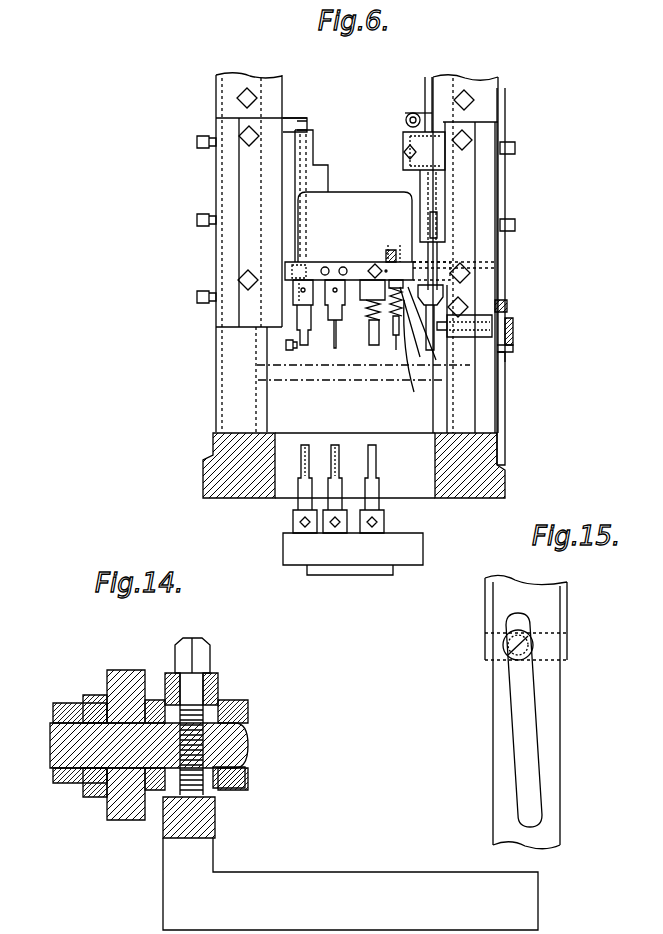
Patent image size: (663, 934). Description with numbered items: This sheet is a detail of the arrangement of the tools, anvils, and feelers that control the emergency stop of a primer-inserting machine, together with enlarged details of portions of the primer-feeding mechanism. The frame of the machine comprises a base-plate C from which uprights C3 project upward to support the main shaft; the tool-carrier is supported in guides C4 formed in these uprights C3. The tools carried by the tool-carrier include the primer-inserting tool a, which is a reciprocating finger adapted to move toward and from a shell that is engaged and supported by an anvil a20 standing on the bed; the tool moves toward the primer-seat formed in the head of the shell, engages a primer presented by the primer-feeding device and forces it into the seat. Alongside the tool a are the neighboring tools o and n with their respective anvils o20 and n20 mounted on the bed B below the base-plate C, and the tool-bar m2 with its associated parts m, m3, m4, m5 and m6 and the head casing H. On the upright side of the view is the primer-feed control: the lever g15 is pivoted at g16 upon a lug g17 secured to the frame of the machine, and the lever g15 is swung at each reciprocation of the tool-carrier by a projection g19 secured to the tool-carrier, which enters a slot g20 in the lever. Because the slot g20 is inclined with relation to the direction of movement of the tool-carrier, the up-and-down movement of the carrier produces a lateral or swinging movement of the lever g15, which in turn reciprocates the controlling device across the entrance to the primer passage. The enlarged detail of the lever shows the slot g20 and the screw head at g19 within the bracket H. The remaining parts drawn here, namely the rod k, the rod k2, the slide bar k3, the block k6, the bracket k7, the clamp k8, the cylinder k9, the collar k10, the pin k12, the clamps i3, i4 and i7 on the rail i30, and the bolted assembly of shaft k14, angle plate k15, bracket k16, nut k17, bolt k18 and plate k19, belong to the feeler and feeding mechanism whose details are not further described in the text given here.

In FIG. 6, the base-plate C is at (212, 475).
In FIG. 6, the uprights C3 is at (508, 417).
In FIG. 6, the guides C4 is at (232, 190).
In FIG. 6, the bed B is at (353, 554).
In FIG. 6, the head casing H is at (355, 227).
In FIG. 15, the head casing H is at (562, 622).
In FIG. 6, the rod k is at (436, 355).
In FIG. 6, the rod k2 is at (437, 252).
In FIG. 6, the slide bar k3 is at (440, 192).
In FIG. 6, the block k6 is at (445, 165).
In FIG. 6, the bracket k7 is at (445, 298).
In FIG. 6, the clamp k8 is at (513, 334).
In FIG. 6, the cylinder k9 is at (282, 388).
In FIG. 6, the collar k10 is at (299, 352).
In FIG. 14, the collar k10 is at (130, 660).
In FIG. 6, the pin k12 is at (305, 124).
In FIG. 14, the shaft k14 is at (70, 740).
In FIG. 14, the angle plate k15 is at (214, 876).
In FIG. 14, the bracket k16 is at (210, 800).
In FIG. 14, the nut k17 is at (208, 712).
In FIG. 14, the bolt k18 is at (200, 688).
In FIG. 14, the plate k19 is at (246, 782).
In FIG. 6, the lever g15 is at (425, 335).
In FIG. 15, the lever g15 is at (555, 712).
In FIG. 6, the pivot g16 is at (406, 120).
In FIG. 6, the lug g17 is at (427, 92).
In FIG. 6, the projection g19 is at (403, 160).
In FIG. 15, the projection g19 is at (535, 647).
In FIG. 6, the slot g20 is at (412, 182).
In FIG. 15, the slot g20 is at (540, 770).
In FIG. 6, the clamp i3 is at (505, 358).
In FIG. 6, the clamp i4 is at (513, 349).
In FIG. 6, the clamp i7 is at (505, 310).
In FIG. 6, the rail i30 is at (503, 298).
In FIG. 6, the spring holder m is at (396, 352).
In FIG. 6, the tool bar m2 is at (378, 261).
In FIG. 6, the spring m3 is at (389, 330).
In FIG. 6, the wire m4 is at (418, 358).
In FIG. 6, the block m5 is at (389, 245).
In FIG. 6, the bar m6 is at (440, 290).
In FIG. 6, the tool holder o is at (303, 323).
In FIG. 6, the primer-inserting tool a is at (335, 323).
In FIG. 6, the tool holder n is at (372, 323).
In FIG. 6, the post o20 is at (300, 478).
In FIG. 6, the anvil a20 is at (335, 450).
In FIG. 6, the post n20 is at (380, 473).